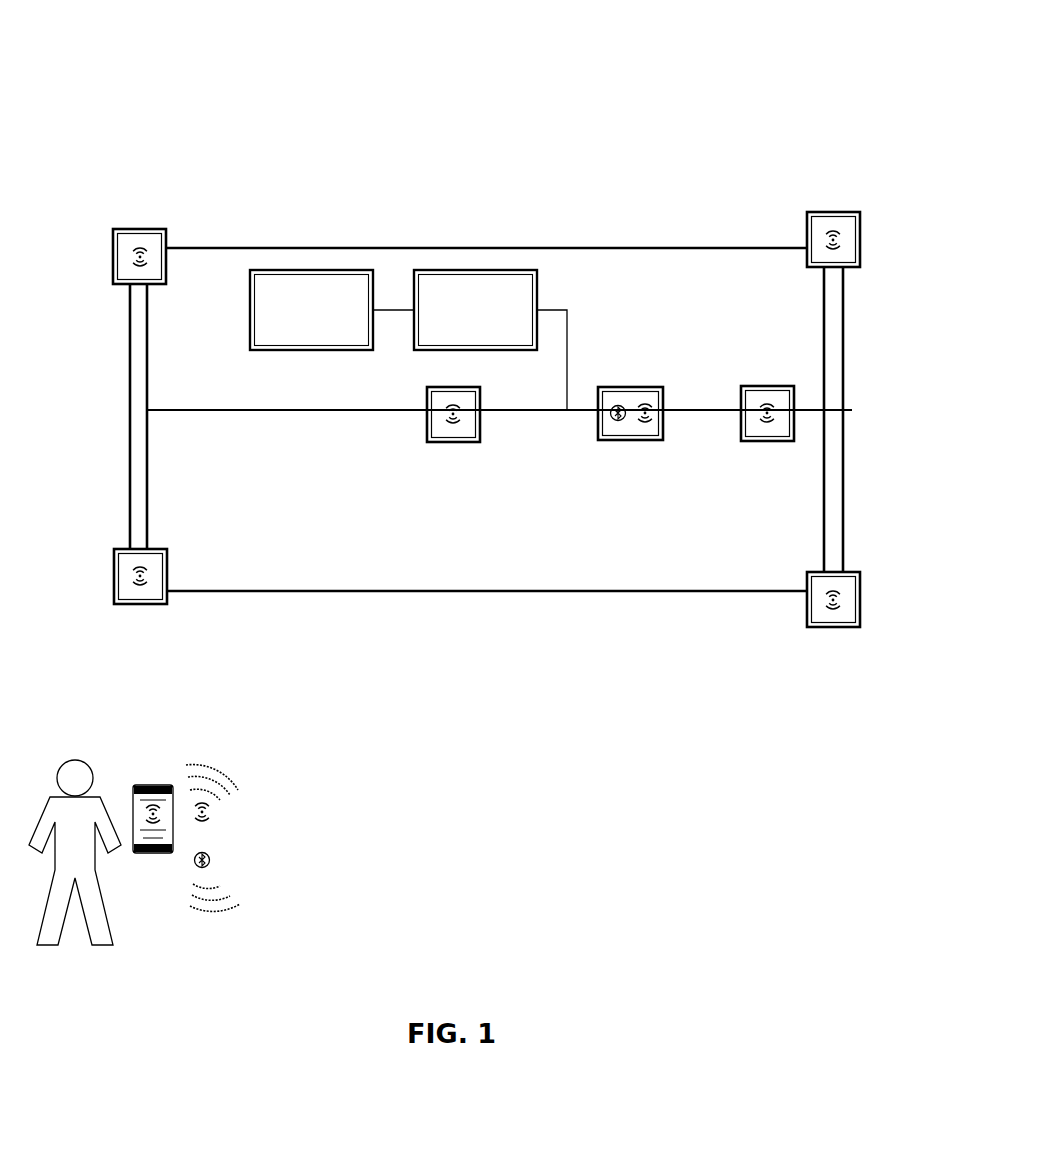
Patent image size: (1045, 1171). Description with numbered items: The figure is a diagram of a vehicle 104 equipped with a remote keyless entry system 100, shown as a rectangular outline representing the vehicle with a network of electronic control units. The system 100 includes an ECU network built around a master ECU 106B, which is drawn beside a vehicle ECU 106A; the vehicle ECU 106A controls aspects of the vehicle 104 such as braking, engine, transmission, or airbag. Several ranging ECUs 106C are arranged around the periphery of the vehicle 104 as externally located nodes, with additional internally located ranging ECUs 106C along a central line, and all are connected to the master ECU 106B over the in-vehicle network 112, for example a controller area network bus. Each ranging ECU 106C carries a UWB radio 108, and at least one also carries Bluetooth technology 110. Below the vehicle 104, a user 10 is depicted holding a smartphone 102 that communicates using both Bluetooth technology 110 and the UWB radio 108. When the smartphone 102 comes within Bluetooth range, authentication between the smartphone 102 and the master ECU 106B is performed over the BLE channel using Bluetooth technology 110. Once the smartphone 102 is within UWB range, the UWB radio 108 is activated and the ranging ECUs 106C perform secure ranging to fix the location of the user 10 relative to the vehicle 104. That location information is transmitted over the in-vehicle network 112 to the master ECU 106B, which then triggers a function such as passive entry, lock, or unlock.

The remote keyless entry system 100 is at (595, 82).
The vehicle 104 is at (697, 246).
The vehicle ECU 106A is at (313, 270).
The master ECU 106B is at (476, 270).
The ranging ECU 106C is at (145, 229).
The UWB radio 108 is at (650, 404).
The Bluetooth technology 110 is at (617, 422).
The in-vehicle network 112 is at (316, 413).
The user 10 is at (78, 748).
The smartphone 102 is at (170, 786).